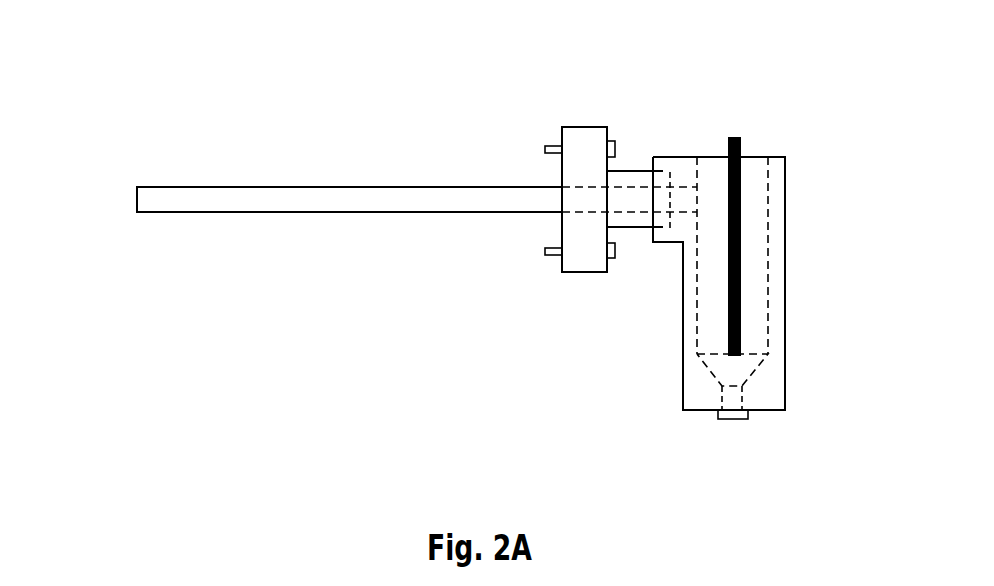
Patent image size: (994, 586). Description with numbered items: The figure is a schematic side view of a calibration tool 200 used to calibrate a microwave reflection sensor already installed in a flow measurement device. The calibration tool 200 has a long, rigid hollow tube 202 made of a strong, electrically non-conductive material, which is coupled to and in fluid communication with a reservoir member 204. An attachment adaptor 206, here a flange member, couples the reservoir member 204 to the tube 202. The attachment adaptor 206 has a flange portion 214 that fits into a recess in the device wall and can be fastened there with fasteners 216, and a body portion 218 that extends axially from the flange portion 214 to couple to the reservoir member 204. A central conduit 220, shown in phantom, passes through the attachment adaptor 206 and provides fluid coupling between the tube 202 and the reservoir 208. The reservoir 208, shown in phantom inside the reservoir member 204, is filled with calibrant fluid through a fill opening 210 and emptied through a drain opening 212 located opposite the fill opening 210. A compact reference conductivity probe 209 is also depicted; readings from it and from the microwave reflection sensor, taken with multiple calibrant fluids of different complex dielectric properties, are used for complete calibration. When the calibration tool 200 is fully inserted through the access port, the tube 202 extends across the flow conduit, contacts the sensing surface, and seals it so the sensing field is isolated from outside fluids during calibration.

The calibration tool 200 is at (172, 87).
The hollow tube 202 is at (266, 213).
The reservoir member 204 is at (787, 242).
The attachment adaptor 206 is at (582, 309).
The reservoir 208 is at (726, 266).
The compact reference conductivity probe 209 is at (741, 137).
The fill opening 210 is at (711, 147).
The drain opening 212 is at (751, 426).
The flange portion 214 is at (562, 270).
The fasteners 216 is at (546, 148).
The body portion 218 is at (630, 171).
The central conduit 220 is at (632, 215).